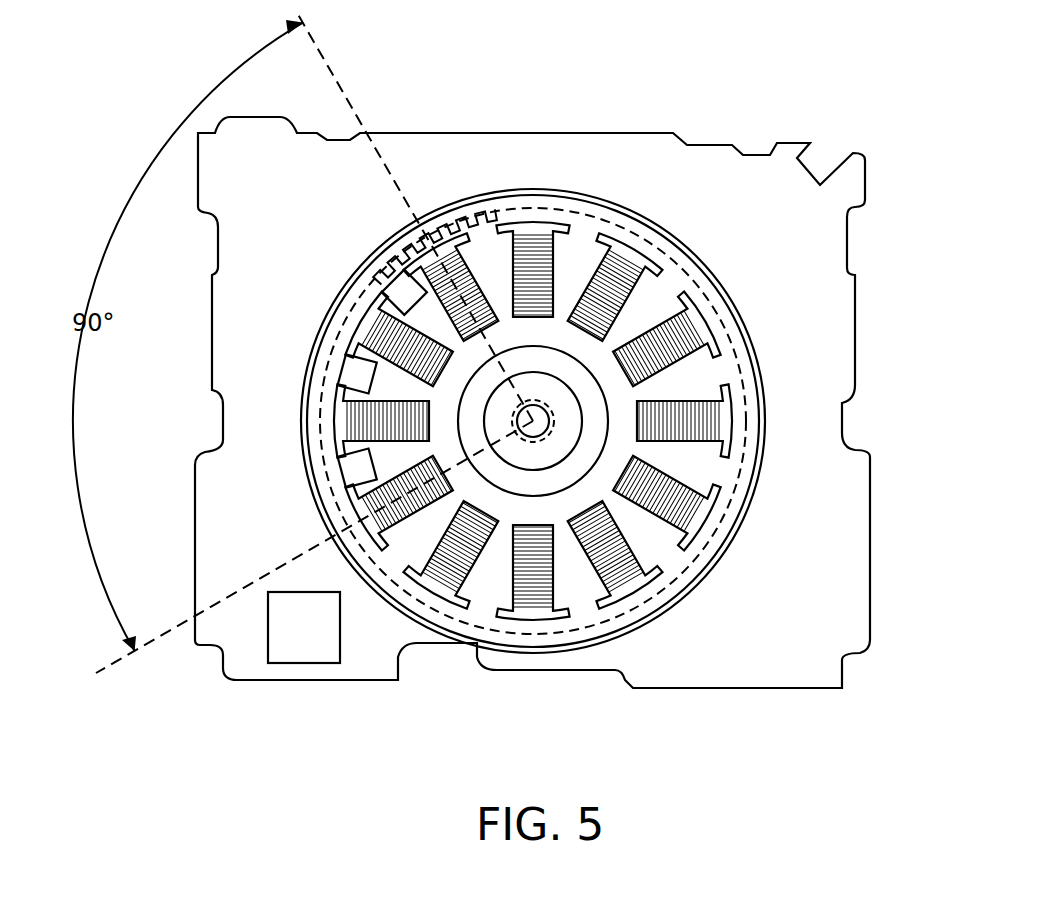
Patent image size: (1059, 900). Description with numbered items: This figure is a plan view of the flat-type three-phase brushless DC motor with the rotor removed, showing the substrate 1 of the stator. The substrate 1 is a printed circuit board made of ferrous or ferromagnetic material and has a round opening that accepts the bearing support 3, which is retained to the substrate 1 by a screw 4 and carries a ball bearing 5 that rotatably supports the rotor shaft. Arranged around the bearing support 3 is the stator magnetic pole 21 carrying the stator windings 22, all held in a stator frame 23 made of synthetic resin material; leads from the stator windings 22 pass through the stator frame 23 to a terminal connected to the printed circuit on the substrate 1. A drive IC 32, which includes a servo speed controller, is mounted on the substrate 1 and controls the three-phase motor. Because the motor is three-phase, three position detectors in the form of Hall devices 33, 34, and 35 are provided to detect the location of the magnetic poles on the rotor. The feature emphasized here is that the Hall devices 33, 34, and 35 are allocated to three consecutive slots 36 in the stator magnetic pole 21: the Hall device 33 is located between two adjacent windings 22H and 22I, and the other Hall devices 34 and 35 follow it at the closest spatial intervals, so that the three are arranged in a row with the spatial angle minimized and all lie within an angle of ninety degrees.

The substrate 1 is at (770, 177).
The bearing support 3 is at (610, 402).
The screw 4 is at (555, 478).
The ball bearing 5 is at (570, 433).
The stator magnetic pole 21 is at (700, 543).
The stator windings 22 is at (697, 512).
The stator winding 22H is at (422, 255).
The stator winding 22I is at (377, 330).
The stator frame 23 is at (597, 360).
The drive IC 32 is at (308, 653).
The Hall device 33 is at (407, 300).
The Hall device 34 is at (353, 380).
The Hall device 35 is at (345, 470).
The slots 36 is at (430, 327).